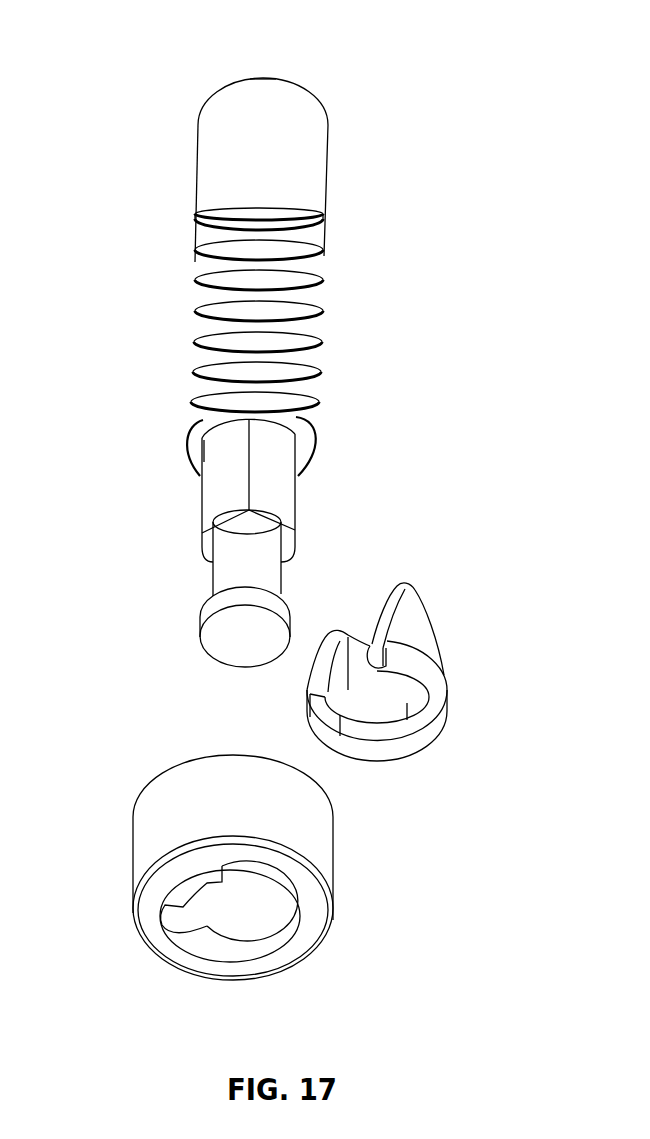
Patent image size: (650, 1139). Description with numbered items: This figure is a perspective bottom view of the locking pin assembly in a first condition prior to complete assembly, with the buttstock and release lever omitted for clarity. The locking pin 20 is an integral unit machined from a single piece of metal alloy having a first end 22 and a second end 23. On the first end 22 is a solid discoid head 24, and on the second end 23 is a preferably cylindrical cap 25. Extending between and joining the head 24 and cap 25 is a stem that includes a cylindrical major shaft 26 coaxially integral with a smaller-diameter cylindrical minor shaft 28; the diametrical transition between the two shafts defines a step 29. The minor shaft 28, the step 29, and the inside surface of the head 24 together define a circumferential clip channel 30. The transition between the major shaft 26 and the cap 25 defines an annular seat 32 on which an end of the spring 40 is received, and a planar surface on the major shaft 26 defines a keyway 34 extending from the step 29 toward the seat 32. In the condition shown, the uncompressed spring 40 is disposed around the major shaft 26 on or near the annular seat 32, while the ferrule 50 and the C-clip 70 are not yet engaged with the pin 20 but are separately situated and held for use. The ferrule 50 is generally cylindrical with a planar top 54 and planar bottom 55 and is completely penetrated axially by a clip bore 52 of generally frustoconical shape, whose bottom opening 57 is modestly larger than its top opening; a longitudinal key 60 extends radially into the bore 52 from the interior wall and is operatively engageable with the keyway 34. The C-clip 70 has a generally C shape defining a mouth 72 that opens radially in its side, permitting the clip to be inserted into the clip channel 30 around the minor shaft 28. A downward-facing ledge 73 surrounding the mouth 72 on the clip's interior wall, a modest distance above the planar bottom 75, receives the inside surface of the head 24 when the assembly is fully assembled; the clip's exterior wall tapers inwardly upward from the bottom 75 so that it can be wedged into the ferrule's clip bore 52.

The locking pin 20 is at (400, 309).
The first end 22 is at (232, 645).
The second end 23 is at (264, 78).
The head 24 is at (211, 611).
The cap 25 is at (212, 137).
The major shaft 26 is at (281, 483).
The minor shaft 28 is at (238, 547).
The step 29 is at (283, 537).
The clip channel 30 is at (196, 568).
The annular seat 32 is at (204, 234).
The keyway 34 is at (218, 506).
The spring 40 is at (308, 292).
The ferrule 50 is at (108, 845).
The clip bore 52 is at (262, 907).
The top 54 is at (200, 757).
The bottom 55 is at (324, 942).
The bottom opening 57 is at (277, 944).
The key 60 is at (200, 893).
The C-clip 70 is at (458, 661).
The mouth 72 is at (362, 633).
The ledge 73 is at (408, 705).
The bottom 75 is at (357, 750).